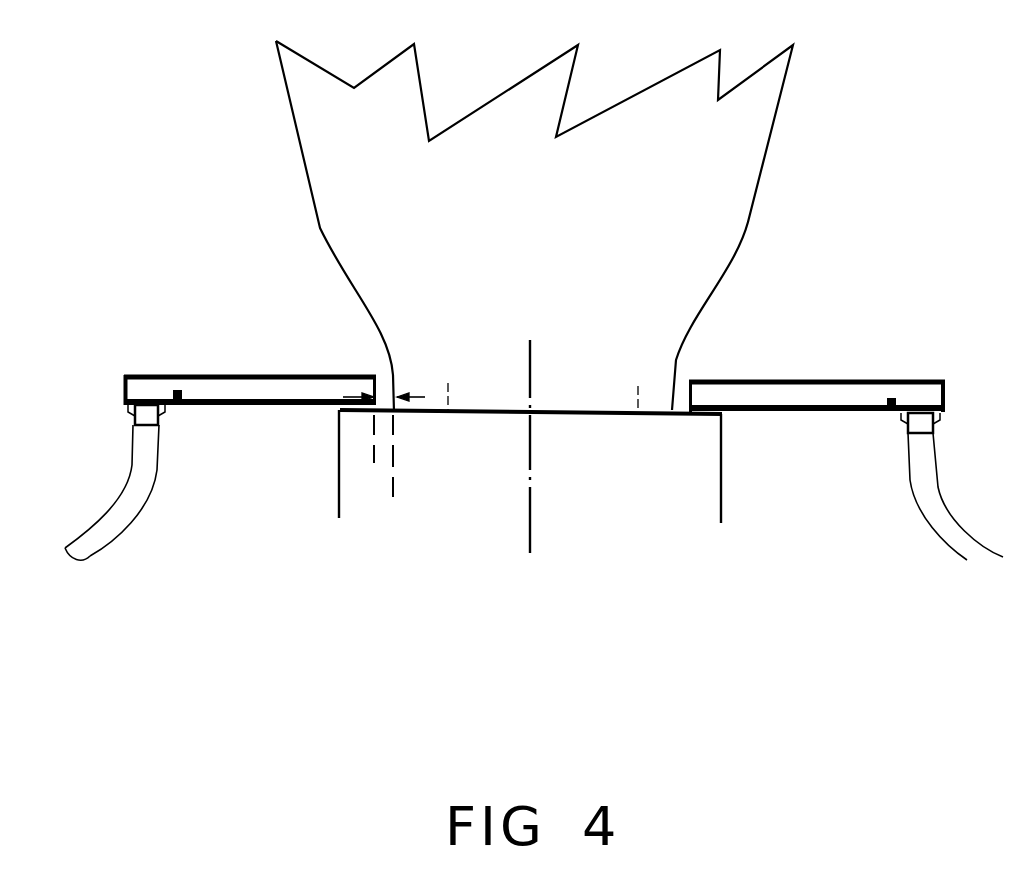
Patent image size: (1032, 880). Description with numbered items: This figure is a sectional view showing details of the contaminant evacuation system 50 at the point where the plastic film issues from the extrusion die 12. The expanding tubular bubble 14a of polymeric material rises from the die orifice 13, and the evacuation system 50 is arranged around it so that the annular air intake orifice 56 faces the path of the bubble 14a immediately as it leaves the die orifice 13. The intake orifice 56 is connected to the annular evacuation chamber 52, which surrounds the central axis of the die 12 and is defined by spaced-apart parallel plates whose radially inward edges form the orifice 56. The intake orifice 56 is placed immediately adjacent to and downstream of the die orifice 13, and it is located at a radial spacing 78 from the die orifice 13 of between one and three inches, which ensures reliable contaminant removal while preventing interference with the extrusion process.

The tubular bubble 14a is at (718, 235).
The die orifice 13 is at (676, 402).
The extrusion die 12 is at (338, 455).
The air intake orifice 56 is at (333, 359).
The radial spacing 78 is at (343, 398).
The annular evacuation chamber 52 is at (246, 391).
The contaminant evacuation system 50 is at (868, 380).